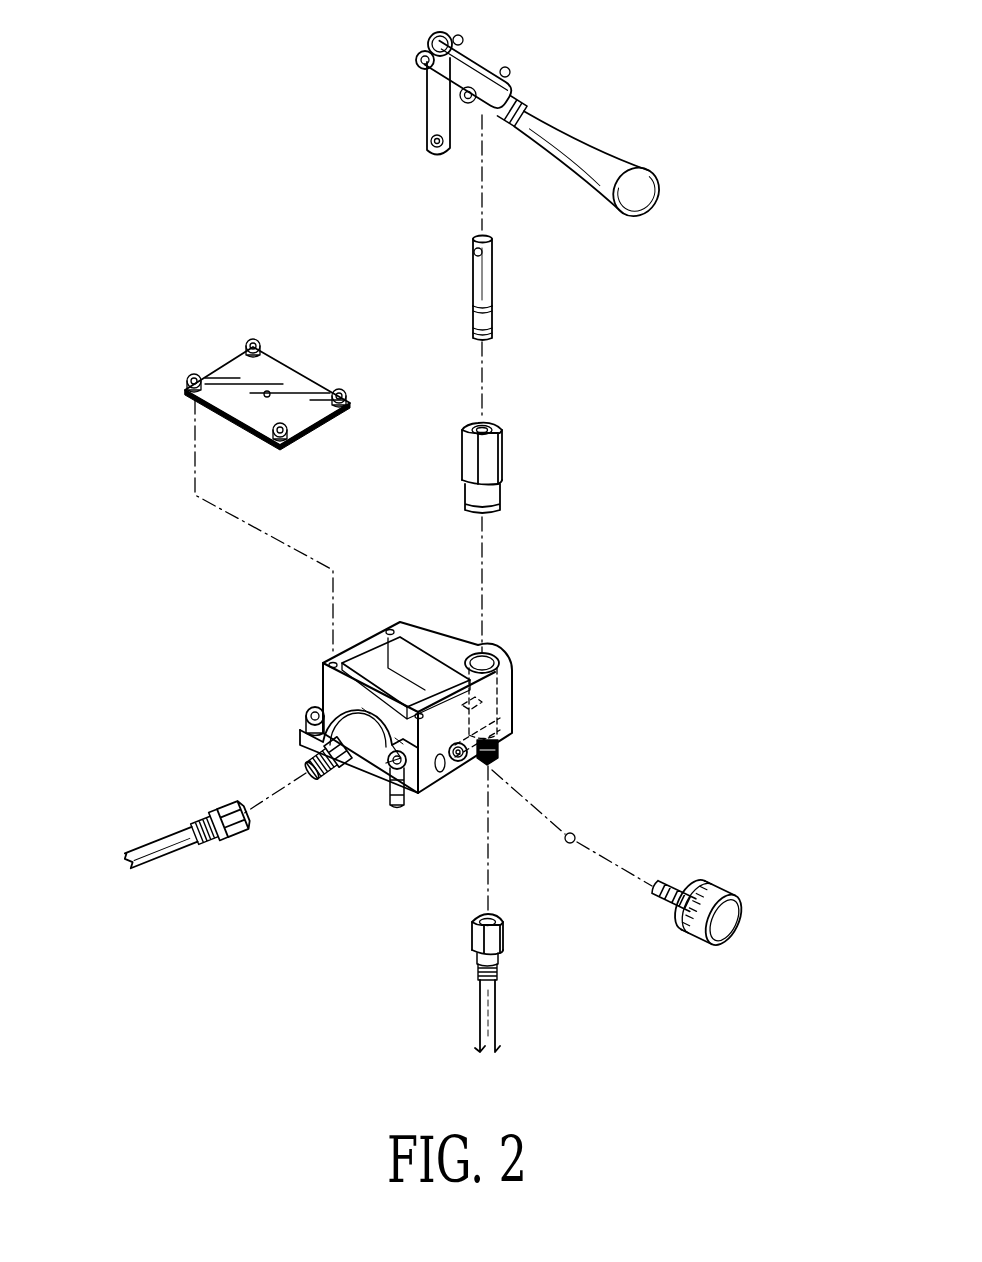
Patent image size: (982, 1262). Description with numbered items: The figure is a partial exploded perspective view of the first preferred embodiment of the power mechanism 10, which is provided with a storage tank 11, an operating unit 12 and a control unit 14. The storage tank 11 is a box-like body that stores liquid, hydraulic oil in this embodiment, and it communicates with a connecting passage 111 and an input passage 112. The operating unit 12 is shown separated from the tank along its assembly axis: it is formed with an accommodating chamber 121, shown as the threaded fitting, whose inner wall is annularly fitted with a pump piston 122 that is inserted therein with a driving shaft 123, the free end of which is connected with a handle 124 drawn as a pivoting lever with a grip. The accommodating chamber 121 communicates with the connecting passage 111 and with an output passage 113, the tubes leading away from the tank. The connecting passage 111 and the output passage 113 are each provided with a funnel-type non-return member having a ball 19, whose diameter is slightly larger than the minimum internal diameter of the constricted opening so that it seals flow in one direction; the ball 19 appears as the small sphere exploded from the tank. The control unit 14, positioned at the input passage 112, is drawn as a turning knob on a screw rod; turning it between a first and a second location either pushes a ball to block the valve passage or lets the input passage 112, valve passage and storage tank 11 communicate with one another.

The power mechanism 10 is at (215, 234).
The storage tank 11 is at (378, 648).
The connecting passage 111 is at (450, 648).
The input passage 112 is at (172, 845).
The output passage 113 is at (494, 1007).
The operating unit 12 is at (566, 122).
The accommodating chamber 121 is at (485, 430).
The pump piston 122 is at (489, 320).
The driving shaft 123 is at (480, 270).
The handle 124 is at (643, 191).
The control unit 14 is at (730, 918).
The ball 19 is at (574, 834).